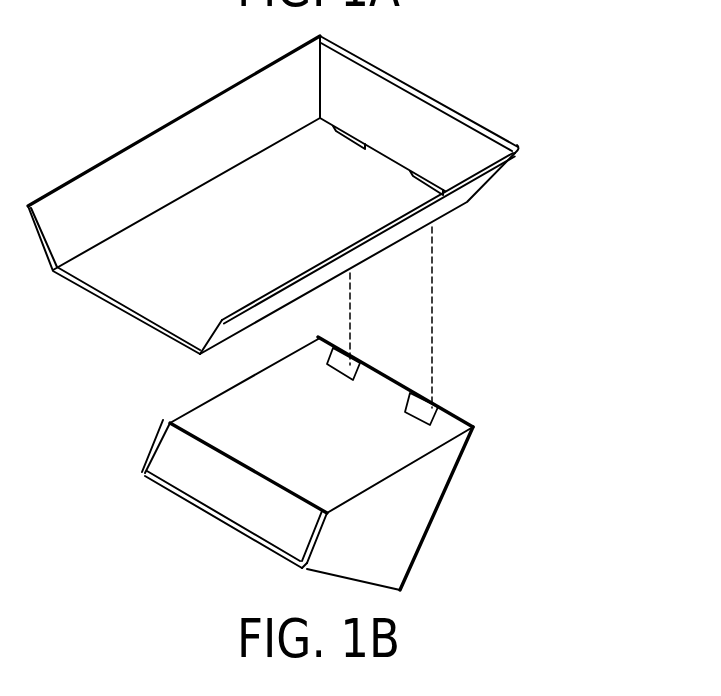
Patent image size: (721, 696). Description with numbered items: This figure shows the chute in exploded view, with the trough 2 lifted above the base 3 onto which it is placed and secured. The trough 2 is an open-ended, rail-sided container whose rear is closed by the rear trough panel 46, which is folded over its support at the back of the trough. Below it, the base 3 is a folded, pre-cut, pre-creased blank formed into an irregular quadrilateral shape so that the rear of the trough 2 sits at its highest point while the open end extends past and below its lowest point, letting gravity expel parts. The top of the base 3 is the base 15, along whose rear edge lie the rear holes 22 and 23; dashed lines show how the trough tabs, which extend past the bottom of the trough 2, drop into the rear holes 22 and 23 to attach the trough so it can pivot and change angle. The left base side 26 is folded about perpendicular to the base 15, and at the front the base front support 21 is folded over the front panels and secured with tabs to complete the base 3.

The trough 2 is at (273, 177).
The rear trough panel 46 is at (393, 113).
The base 3 is at (360, 419).
The base 15 is at (342, 437).
The base front support 21 is at (213, 484).
The rear hole 22 is at (357, 352).
The rear hole 23 is at (438, 398).
The left base side 26 is at (393, 553).